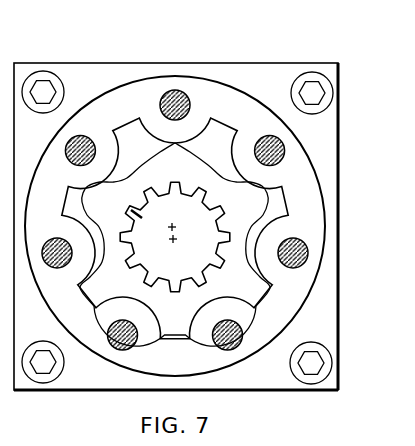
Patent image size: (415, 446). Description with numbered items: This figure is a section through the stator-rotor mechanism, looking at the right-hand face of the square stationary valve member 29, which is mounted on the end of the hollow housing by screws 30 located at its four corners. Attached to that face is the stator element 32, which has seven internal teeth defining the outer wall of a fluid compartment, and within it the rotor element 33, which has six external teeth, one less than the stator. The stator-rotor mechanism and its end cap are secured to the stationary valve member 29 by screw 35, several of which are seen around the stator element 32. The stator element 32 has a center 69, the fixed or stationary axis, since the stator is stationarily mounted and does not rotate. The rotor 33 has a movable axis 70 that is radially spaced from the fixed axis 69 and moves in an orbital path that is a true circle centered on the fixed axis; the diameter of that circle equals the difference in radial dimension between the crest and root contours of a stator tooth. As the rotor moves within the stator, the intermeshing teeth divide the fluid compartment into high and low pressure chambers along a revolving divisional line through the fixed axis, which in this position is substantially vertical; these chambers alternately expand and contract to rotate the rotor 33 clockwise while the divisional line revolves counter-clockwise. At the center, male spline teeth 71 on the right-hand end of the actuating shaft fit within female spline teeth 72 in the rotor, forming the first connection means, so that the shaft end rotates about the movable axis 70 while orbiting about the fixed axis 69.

The stationary valve member 29 is at (126, 63).
The screws 30 is at (44, 80).
The stator element 32 is at (229, 97).
The rotor element 33 is at (181, 310).
The screw 35 is at (178, 92).
The center of the stator element 69 is at (175, 225).
The movable axis 70 is at (176, 239).
The male spline teeth 71 is at (150, 219).
The female spline teeth 72 is at (127, 209).